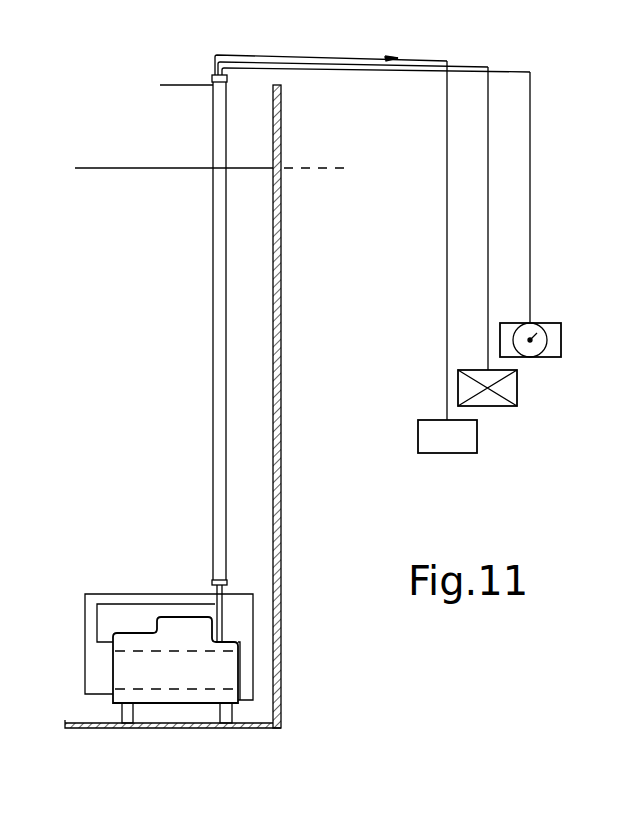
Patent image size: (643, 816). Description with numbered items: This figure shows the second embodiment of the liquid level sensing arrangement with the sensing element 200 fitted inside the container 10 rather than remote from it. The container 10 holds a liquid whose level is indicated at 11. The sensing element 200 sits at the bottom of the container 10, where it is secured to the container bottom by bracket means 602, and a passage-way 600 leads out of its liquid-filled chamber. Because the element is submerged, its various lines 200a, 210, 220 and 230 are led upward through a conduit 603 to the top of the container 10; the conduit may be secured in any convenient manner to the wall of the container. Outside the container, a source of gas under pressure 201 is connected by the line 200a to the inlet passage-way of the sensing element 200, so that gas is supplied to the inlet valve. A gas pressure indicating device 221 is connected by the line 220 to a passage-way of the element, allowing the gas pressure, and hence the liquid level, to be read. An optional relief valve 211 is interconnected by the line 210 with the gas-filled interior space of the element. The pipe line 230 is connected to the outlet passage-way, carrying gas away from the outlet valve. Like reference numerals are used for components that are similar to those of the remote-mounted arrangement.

The container 10 is at (281, 352).
The liquid level 11 is at (302, 168).
The conduit 603 is at (218, 390).
The pipe line 230 is at (362, 57).
The line 200a is at (447, 208).
The line 210 is at (488, 257).
The line 220 is at (530, 187).
The gas pressure indicating device 221 is at (553, 337).
The relief valve 211 is at (510, 396).
The source of gas under pressure 201 is at (460, 437).
The passage-way 600 is at (113, 665).
The sensing element 200 is at (243, 668).
The bracket means 602 is at (233, 713).